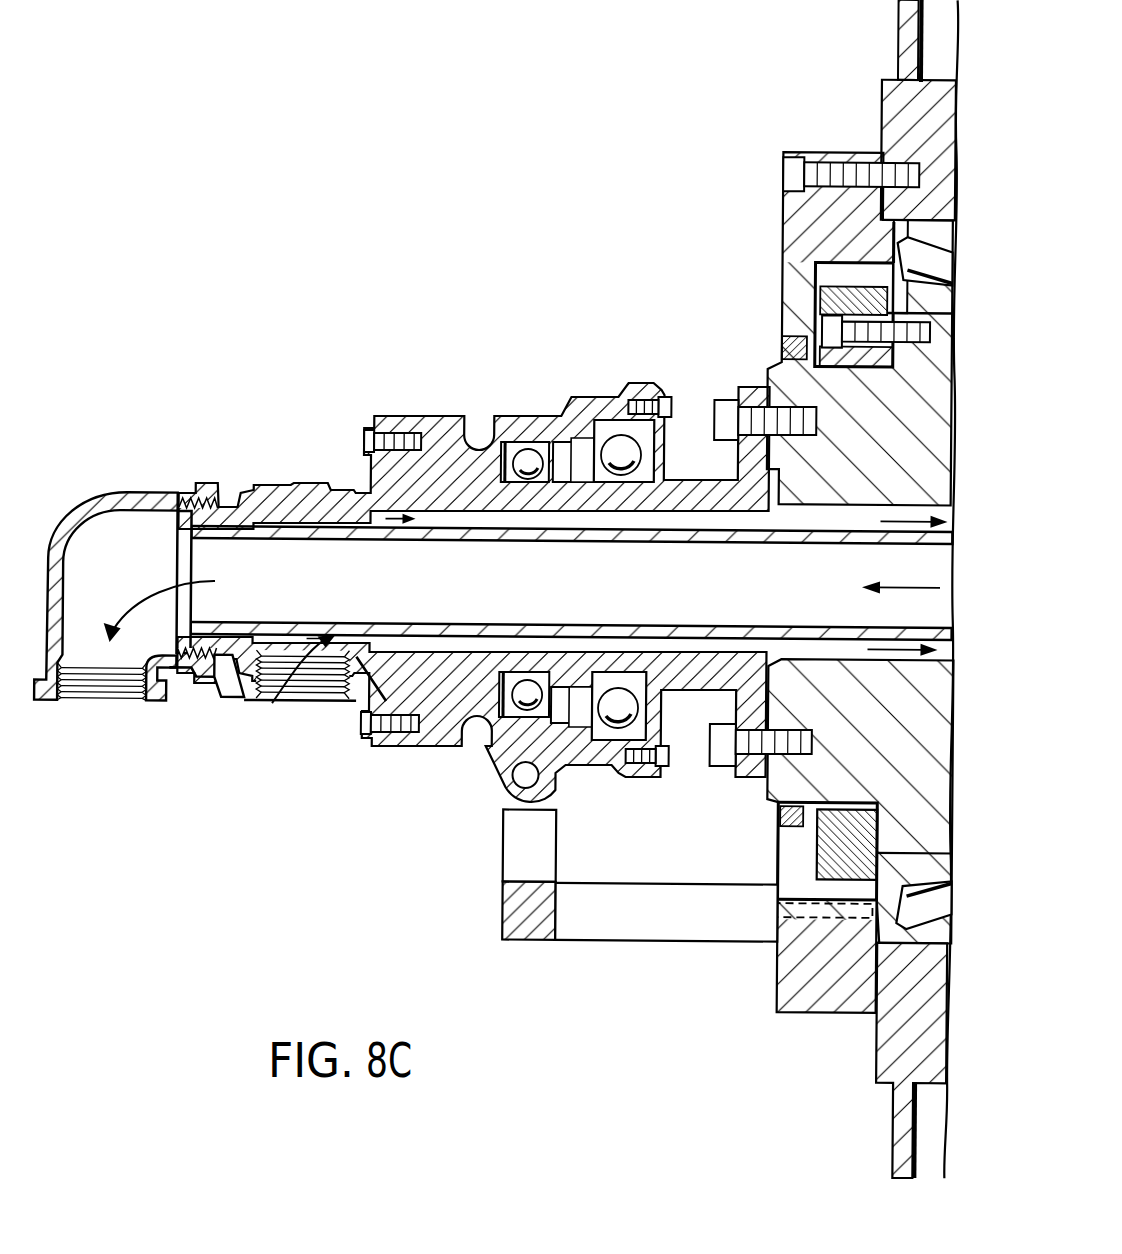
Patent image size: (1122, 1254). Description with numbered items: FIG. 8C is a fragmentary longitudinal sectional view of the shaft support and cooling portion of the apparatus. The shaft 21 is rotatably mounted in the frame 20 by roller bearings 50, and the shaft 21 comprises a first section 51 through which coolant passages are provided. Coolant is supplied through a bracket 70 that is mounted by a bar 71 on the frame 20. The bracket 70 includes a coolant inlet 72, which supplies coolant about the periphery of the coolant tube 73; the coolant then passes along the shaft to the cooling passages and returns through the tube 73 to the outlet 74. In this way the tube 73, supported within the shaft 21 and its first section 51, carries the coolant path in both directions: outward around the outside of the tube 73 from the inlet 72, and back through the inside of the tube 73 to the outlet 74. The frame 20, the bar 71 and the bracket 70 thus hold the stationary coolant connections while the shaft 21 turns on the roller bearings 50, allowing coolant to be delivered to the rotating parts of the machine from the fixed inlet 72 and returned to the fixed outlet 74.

The frame 20 is at (887, 1045).
The shaft 21 is at (727, 369).
The roller bearings 50 is at (890, 945).
The first section 51 is at (790, 380).
The bracket 70 is at (242, 673).
The bar 71 is at (540, 920).
The coolant inlet 72 is at (293, 680).
The tube 73 is at (472, 615).
The outlet 74 is at (98, 690).